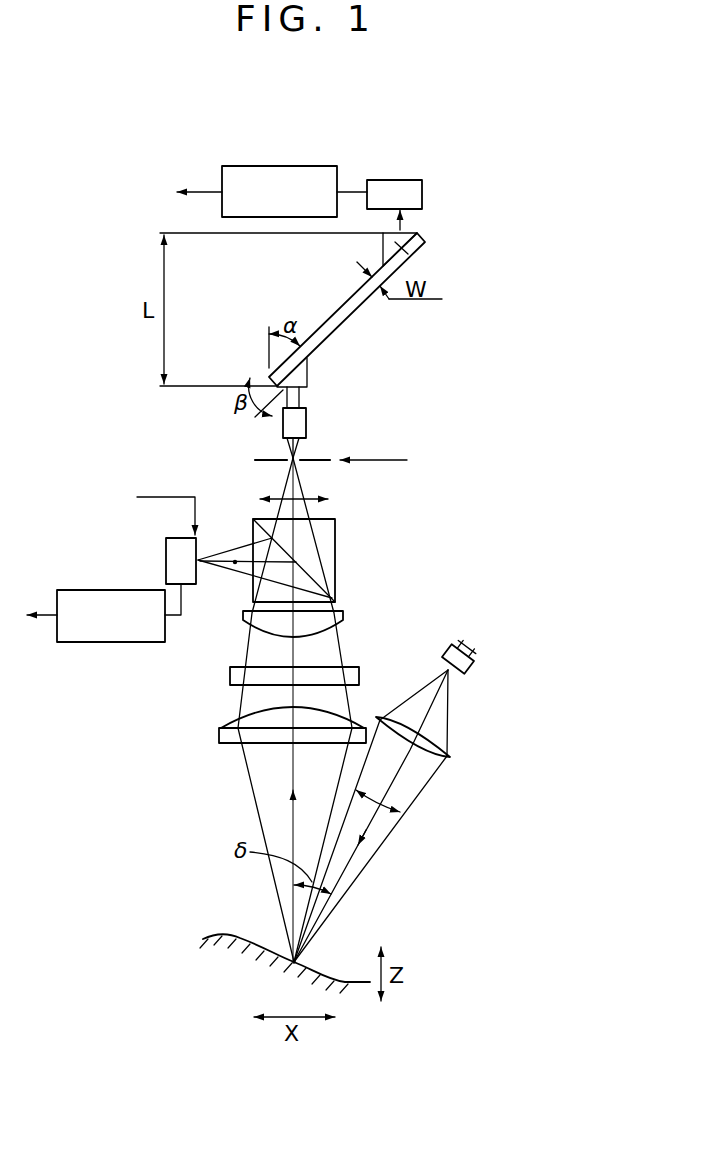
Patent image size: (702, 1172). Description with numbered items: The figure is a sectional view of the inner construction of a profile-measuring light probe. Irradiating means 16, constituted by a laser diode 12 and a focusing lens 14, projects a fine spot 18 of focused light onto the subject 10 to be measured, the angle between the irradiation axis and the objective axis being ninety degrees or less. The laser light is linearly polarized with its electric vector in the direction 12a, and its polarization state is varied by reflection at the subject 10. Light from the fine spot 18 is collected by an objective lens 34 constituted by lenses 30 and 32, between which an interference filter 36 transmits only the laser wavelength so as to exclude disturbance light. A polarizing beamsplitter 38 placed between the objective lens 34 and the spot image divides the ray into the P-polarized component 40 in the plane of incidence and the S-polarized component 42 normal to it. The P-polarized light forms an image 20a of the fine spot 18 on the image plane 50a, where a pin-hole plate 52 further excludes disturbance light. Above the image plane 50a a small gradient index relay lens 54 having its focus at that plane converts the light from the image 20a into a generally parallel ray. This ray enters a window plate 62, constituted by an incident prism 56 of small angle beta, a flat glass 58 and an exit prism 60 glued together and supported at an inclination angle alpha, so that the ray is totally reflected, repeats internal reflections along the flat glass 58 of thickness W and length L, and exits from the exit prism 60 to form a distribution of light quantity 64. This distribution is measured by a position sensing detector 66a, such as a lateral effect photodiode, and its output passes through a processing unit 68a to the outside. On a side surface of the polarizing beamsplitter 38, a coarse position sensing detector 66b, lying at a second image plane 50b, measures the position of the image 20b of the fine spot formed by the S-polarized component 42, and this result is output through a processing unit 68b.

The subject 10 is at (233, 953).
The laser diode 12 is at (467, 667).
The direction of the electric vector 12a is at (393, 800).
The focusing lens 14 is at (450, 755).
The irradiating means 16 is at (485, 704).
The fine spot 18 is at (300, 961).
The image of the fine spot 20a is at (297, 456).
The image of the fine spot by the S-polarized component 20b is at (202, 553).
The lens 30 is at (220, 733).
The lens 32 is at (250, 617).
The objective lens 34 is at (208, 699).
The interference filter 36 is at (358, 670).
The polarizing beamsplitter 38 is at (337, 551).
The P-polarized component 40 is at (300, 498).
The S-polarized component 42 is at (235, 563).
The image plane 50a is at (383, 460).
The second image plane 50b is at (148, 494).
The pin-hole plate 52 is at (322, 459).
The relay lens 54 is at (283, 422).
The incident prism 56 is at (307, 377).
The flat glass 58 is at (338, 327).
The exit prism 60 is at (407, 252).
The window plate 62 is at (427, 310).
The distribution of light quantity 64 is at (403, 215).
The position sensing detector 66a is at (422, 192).
The position sensing detector 66b is at (166, 560).
The processing unit 68a is at (320, 166).
The processing unit 68b is at (91, 642).